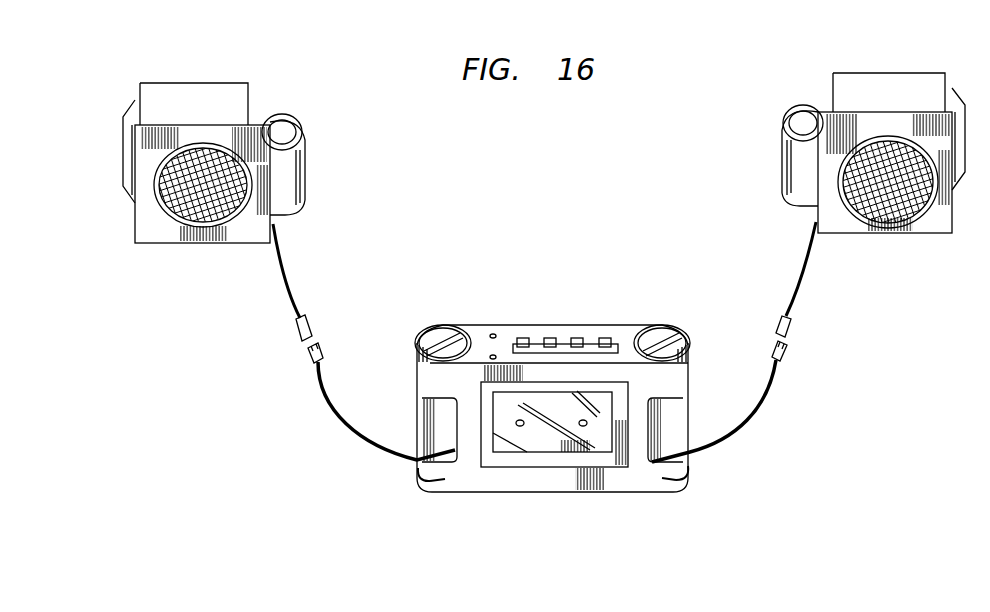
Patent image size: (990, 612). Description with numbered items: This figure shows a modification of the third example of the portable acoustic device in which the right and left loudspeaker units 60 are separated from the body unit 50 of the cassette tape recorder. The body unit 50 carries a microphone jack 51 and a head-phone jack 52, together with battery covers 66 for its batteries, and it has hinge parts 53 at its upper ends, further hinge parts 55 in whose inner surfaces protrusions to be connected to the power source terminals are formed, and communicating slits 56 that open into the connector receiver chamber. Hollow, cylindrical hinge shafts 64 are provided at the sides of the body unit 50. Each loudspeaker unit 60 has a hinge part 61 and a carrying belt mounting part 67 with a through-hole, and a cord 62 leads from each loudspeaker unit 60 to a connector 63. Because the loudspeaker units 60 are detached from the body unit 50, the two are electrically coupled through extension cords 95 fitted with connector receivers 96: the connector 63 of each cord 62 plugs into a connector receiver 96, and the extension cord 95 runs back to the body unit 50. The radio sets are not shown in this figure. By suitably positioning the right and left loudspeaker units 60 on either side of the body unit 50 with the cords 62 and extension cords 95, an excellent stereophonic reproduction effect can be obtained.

The body unit 50 is at (590, 478).
The microphone jack 51 is at (496, 354).
The head-phone jack 52 is at (493, 333).
The hinge parts 53 is at (415, 362).
The hinge parts 55 is at (417, 488).
The communicating slits 56 is at (436, 488).
The loudspeaker units 60 is at (203, 243).
The hinge parts 61 is at (307, 157).
The cords 62 is at (287, 270).
The connectors 63 is at (297, 332).
The hollow, cylindrical hinge shafts 64 is at (418, 415).
The battery covers 66 is at (448, 322).
The carrying belt mounting parts 67 is at (128, 100).
The extension cords 95 is at (355, 435).
The connector receivers 96 is at (312, 355).